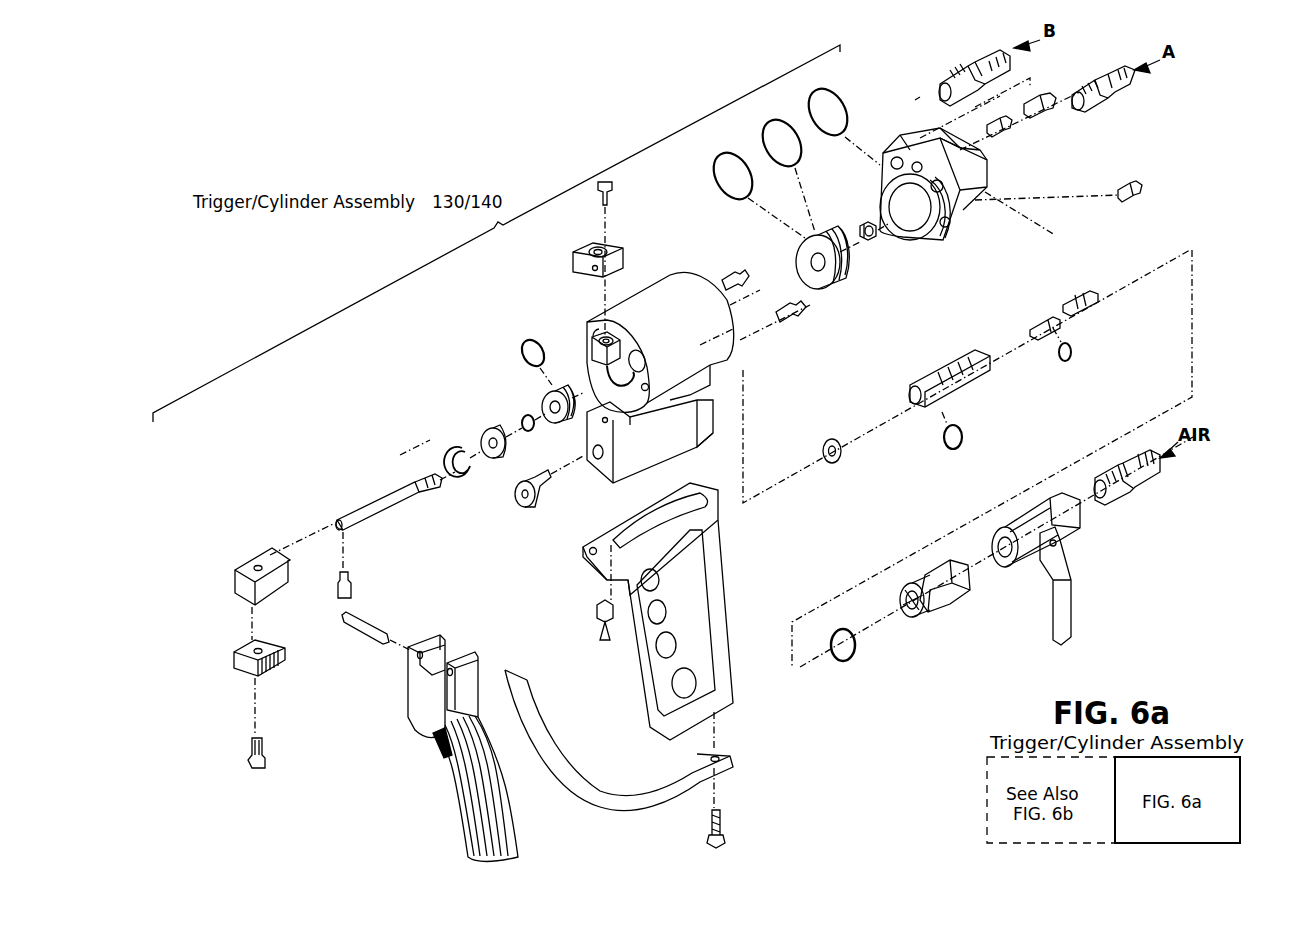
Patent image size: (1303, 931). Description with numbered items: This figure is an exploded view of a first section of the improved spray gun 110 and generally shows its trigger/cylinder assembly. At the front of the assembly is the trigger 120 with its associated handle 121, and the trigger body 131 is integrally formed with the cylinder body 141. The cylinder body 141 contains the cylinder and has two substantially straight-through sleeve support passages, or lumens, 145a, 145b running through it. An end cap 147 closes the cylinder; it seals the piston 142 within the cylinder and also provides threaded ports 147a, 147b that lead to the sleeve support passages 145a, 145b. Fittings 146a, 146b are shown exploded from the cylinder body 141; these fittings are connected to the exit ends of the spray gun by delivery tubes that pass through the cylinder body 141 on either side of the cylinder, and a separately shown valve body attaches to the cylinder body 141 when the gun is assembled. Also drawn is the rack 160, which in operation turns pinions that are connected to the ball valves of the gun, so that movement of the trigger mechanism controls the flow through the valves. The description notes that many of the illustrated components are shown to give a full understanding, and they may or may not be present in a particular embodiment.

The improved spray gun 110 is at (430, 108).
The trigger 120 is at (466, 802).
The handle 121 is at (693, 599).
The trigger body 131 is at (663, 435).
The cylinder body 141 is at (624, 320).
The piston 142 is at (832, 284).
The sleeve support passage 145a is at (648, 364).
The sleeve support passage 145b is at (592, 335).
The fitting 146a is at (1120, 97).
The fitting 146b is at (968, 62).
The end cap 147 is at (953, 180).
The threaded port 147a is at (975, 176).
The threaded port 147b is at (928, 146).
The rack 160 is at (275, 658).